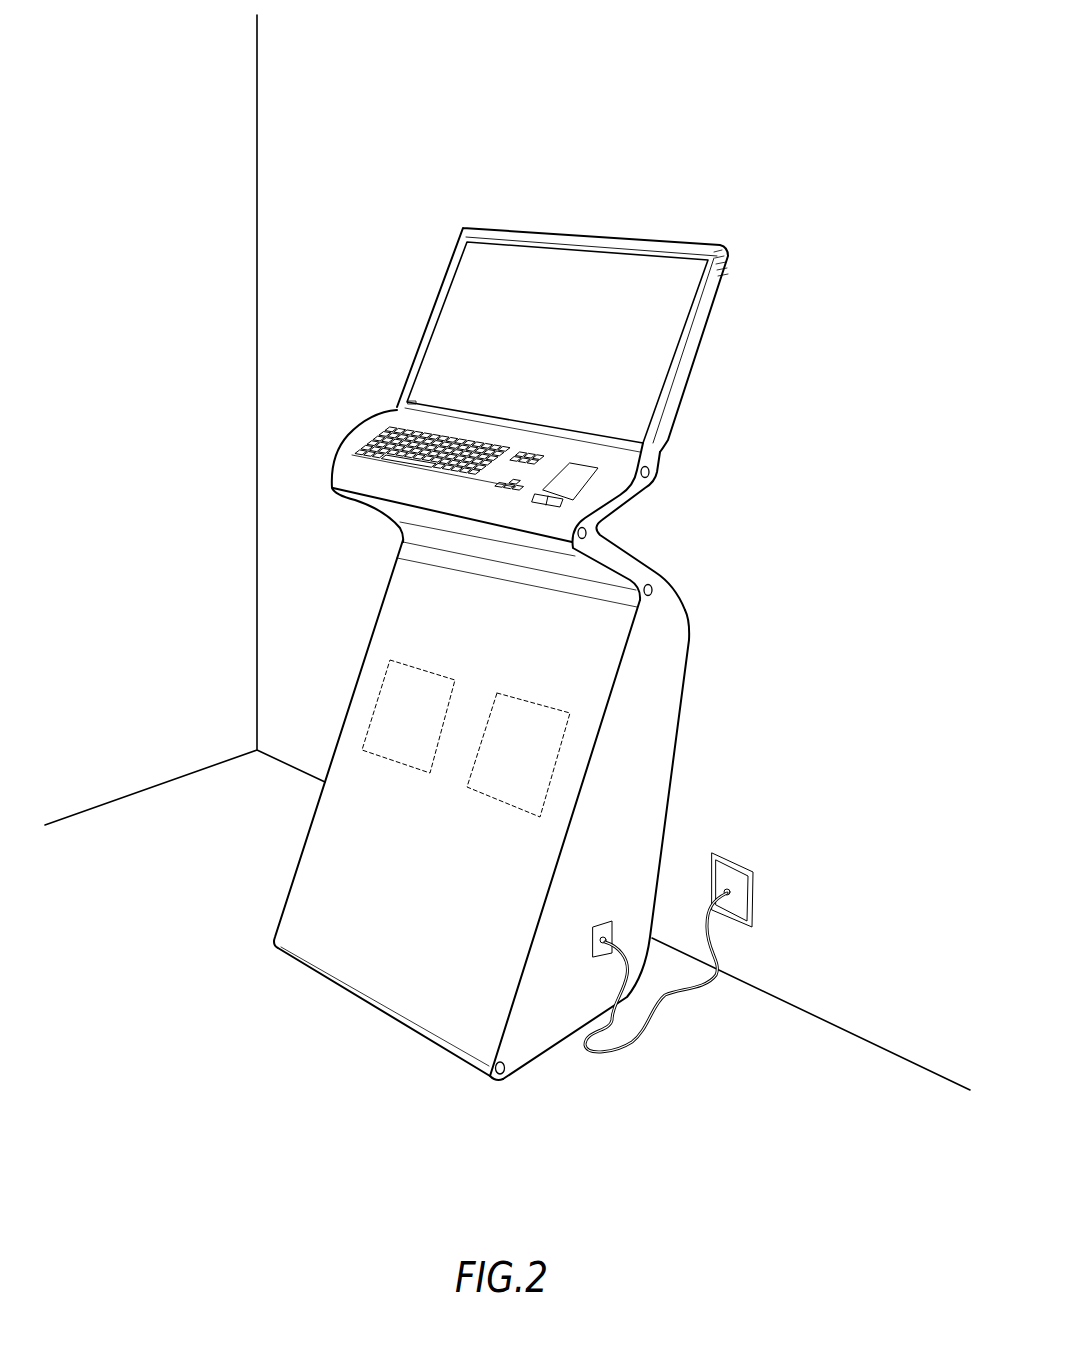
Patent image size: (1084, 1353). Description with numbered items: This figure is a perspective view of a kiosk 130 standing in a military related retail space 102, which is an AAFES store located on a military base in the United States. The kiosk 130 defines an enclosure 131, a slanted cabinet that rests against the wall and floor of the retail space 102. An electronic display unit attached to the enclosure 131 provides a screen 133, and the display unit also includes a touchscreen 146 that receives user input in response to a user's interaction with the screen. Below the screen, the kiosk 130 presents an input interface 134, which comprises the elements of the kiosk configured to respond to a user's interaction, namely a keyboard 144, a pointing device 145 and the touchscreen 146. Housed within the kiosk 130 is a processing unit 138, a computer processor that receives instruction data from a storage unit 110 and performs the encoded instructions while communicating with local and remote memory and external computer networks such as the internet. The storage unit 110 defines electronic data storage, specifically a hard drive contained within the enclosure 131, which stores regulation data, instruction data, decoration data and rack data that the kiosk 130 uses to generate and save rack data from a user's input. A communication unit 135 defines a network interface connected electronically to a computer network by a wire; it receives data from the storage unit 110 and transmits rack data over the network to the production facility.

The military related retail space 102 is at (140, 76).
The storage unit 110 is at (552, 783).
The kiosk 130 is at (657, 578).
The enclosure 131 is at (648, 876).
The screen 133 is at (677, 313).
The input interface 134 is at (608, 482).
The communication unit 135 is at (600, 942).
The processing unit 138 is at (375, 700).
The keyboard 144 is at (370, 445).
The pointing device 145 is at (593, 470).
The touchscreen 146 is at (448, 313).